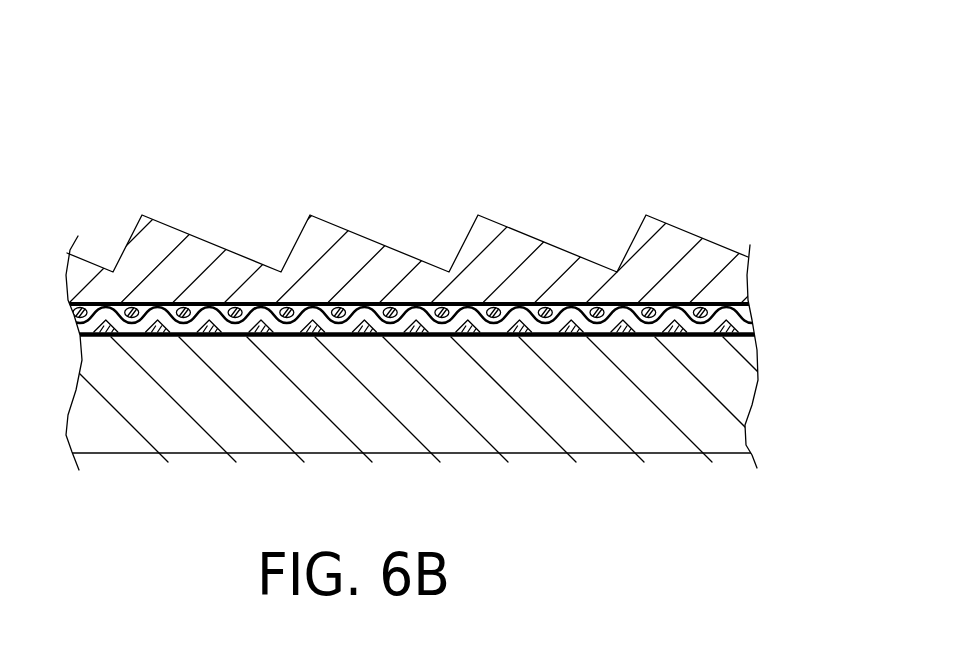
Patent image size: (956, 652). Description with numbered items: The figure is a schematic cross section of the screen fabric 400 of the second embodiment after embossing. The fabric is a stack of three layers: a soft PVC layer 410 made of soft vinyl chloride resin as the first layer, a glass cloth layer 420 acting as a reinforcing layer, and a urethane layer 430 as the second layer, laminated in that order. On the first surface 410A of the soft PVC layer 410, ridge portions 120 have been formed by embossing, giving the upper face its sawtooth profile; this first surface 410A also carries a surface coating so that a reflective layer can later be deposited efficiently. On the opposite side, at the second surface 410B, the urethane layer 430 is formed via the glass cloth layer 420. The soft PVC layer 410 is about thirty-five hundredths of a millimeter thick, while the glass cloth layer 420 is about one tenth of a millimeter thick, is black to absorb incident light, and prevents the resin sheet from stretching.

The screen fabric 400 is at (101, 82).
The ridge portions 120 is at (142, 200).
The soft PVC layer 410 is at (740, 280).
The first surface 410A is at (528, 250).
The second surface 410B is at (571, 298).
The glass cloth layer 420 is at (748, 318).
The urethane layer 430 is at (737, 378).